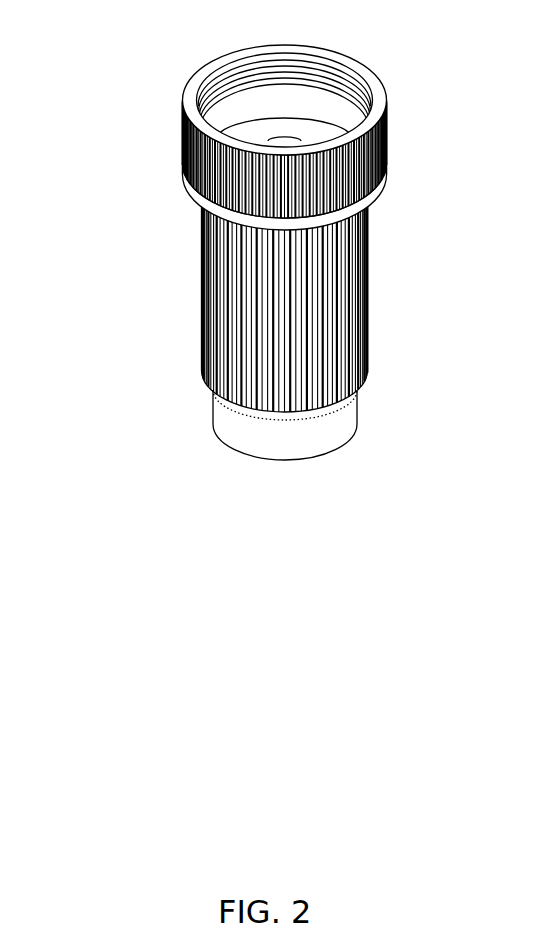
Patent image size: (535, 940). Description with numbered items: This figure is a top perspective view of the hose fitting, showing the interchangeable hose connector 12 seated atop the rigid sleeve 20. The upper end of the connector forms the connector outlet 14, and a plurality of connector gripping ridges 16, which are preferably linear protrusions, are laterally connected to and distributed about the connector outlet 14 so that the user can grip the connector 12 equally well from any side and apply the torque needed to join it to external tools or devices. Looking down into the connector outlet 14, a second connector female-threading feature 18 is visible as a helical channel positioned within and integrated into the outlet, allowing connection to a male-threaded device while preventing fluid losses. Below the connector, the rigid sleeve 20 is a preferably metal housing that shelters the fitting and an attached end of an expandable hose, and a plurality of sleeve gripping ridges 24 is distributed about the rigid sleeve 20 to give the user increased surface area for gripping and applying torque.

The interchangeable hose connector 12 is at (115, 122).
The connector outlet 14 is at (243, 63).
The plurality of connector gripping ridges 16 is at (360, 163).
The second connector female-threading feature 18 is at (352, 80).
The rigid sleeve 20 is at (146, 237).
The plurality of sleeve gripping ridges 24 is at (352, 313).